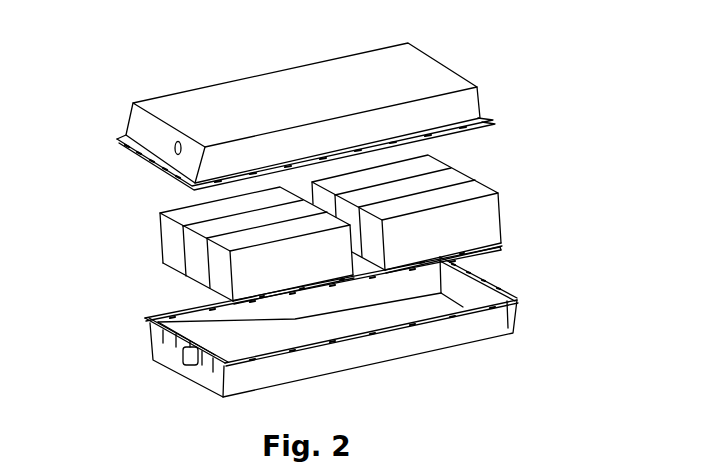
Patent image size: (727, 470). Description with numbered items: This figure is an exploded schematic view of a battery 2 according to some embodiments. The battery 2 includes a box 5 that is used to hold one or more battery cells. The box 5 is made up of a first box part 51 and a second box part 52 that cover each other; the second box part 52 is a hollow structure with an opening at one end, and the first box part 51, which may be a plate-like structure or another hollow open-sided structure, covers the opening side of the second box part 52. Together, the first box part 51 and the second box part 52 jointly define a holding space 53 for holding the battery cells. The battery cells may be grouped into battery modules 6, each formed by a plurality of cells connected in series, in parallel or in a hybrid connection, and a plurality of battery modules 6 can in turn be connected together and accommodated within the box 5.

The battery 2 is at (300, 41).
The box 5 is at (79, 253).
The first box part 51 is at (145, 127).
The second box part 52 is at (157, 358).
The holding space 53 is at (463, 292).
The battery module 6 is at (478, 218).